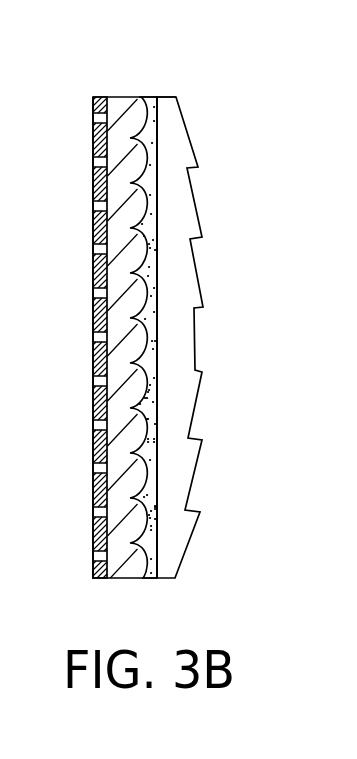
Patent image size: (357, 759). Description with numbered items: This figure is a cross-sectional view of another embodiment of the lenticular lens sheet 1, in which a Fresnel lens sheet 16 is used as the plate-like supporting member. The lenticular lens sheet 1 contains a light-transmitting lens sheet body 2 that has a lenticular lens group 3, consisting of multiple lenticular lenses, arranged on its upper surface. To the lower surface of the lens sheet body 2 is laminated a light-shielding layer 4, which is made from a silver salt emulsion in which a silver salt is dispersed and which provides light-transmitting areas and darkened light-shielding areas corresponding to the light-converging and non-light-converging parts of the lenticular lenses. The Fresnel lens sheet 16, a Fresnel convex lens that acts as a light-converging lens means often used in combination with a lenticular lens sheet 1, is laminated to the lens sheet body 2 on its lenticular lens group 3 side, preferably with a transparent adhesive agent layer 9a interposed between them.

The lenticular lens sheet 1 is at (110, 87).
The lens sheet body 2 is at (127, 96).
The lenticular lens group 3 is at (150, 96).
The light-shielding layer 4 is at (100, 96).
The Fresnel lens sheet 16 is at (185, 265).
The transparent adhesive agent layer 9a is at (158, 359).